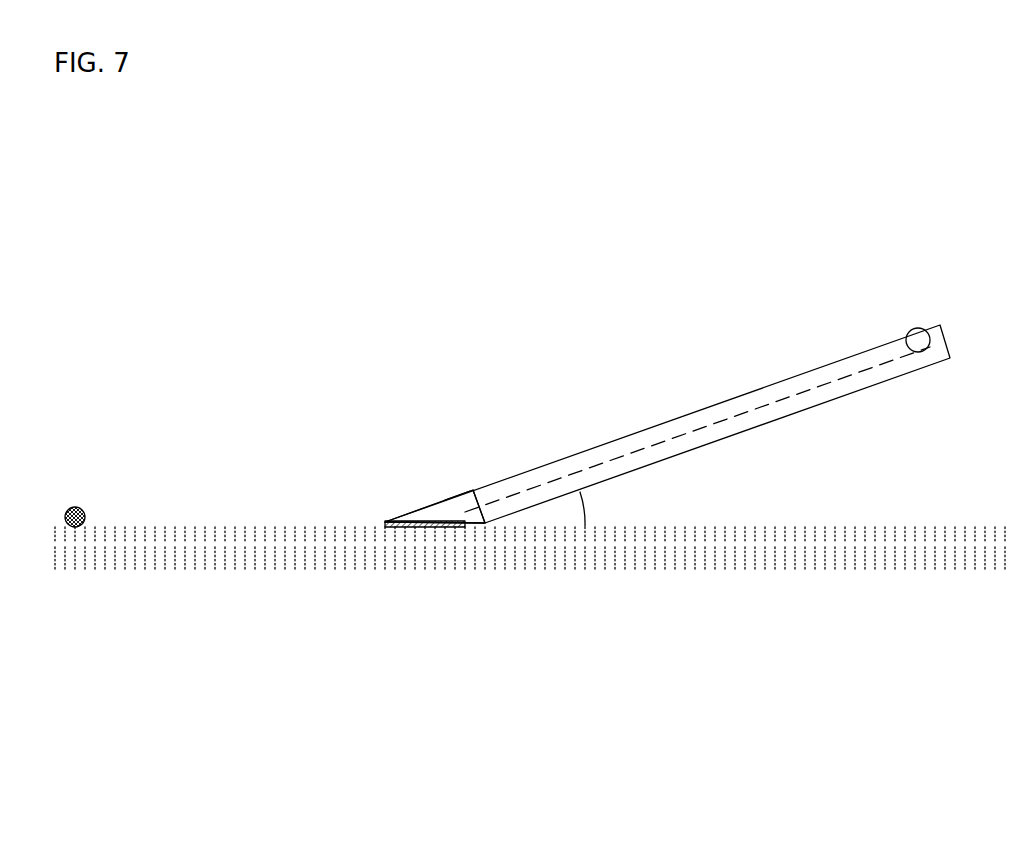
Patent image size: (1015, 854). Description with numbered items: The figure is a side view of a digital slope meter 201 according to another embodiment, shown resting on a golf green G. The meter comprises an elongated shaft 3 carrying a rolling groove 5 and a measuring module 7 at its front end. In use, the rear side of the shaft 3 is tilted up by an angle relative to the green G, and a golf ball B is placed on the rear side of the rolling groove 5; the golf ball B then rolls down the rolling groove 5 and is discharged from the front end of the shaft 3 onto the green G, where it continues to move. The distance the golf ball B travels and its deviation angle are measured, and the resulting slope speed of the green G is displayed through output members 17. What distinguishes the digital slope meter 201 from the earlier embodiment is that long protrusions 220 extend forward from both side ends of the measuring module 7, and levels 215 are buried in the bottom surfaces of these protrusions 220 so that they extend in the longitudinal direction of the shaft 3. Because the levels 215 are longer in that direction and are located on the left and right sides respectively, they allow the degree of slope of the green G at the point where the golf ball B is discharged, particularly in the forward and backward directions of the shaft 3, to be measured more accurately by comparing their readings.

The digital slope meter 201 is at (652, 404).
The shaft 3 is at (841, 360).
The rolling groove 5 is at (772, 402).
The measuring module 7 is at (455, 496).
The output members 17 is at (437, 508).
The protrusions 220 is at (387, 530).
The levels 215 is at (430, 530).
The green G is at (530, 529).
The golf ball B is at (82, 508).